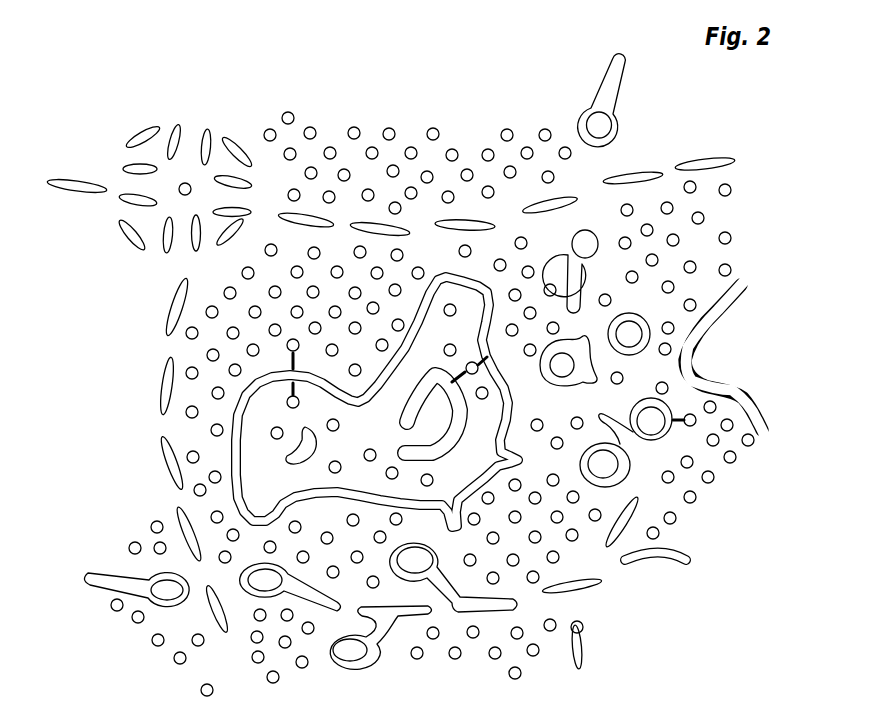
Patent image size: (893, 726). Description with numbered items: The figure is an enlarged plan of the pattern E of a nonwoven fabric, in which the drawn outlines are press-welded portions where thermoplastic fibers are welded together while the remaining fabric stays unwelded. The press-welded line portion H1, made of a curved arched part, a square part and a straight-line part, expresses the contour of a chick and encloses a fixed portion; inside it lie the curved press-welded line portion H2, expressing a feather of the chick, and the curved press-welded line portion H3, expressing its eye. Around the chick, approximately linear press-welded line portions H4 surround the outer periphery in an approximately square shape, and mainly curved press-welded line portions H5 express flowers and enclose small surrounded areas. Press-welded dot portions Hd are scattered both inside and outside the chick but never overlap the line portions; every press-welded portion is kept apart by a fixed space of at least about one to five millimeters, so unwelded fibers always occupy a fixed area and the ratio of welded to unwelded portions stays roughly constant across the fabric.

The press-welded line portion H1 is at (232, 455).
The press-welded line portion H2 is at (448, 403).
The press-welded line portion H3 is at (305, 440).
The press-welded line portions H4 is at (468, 220).
The press-welded line portions H5 is at (590, 262).
The press-welded dot portions Hd is at (432, 127).
The pattern E is at (105, 460).